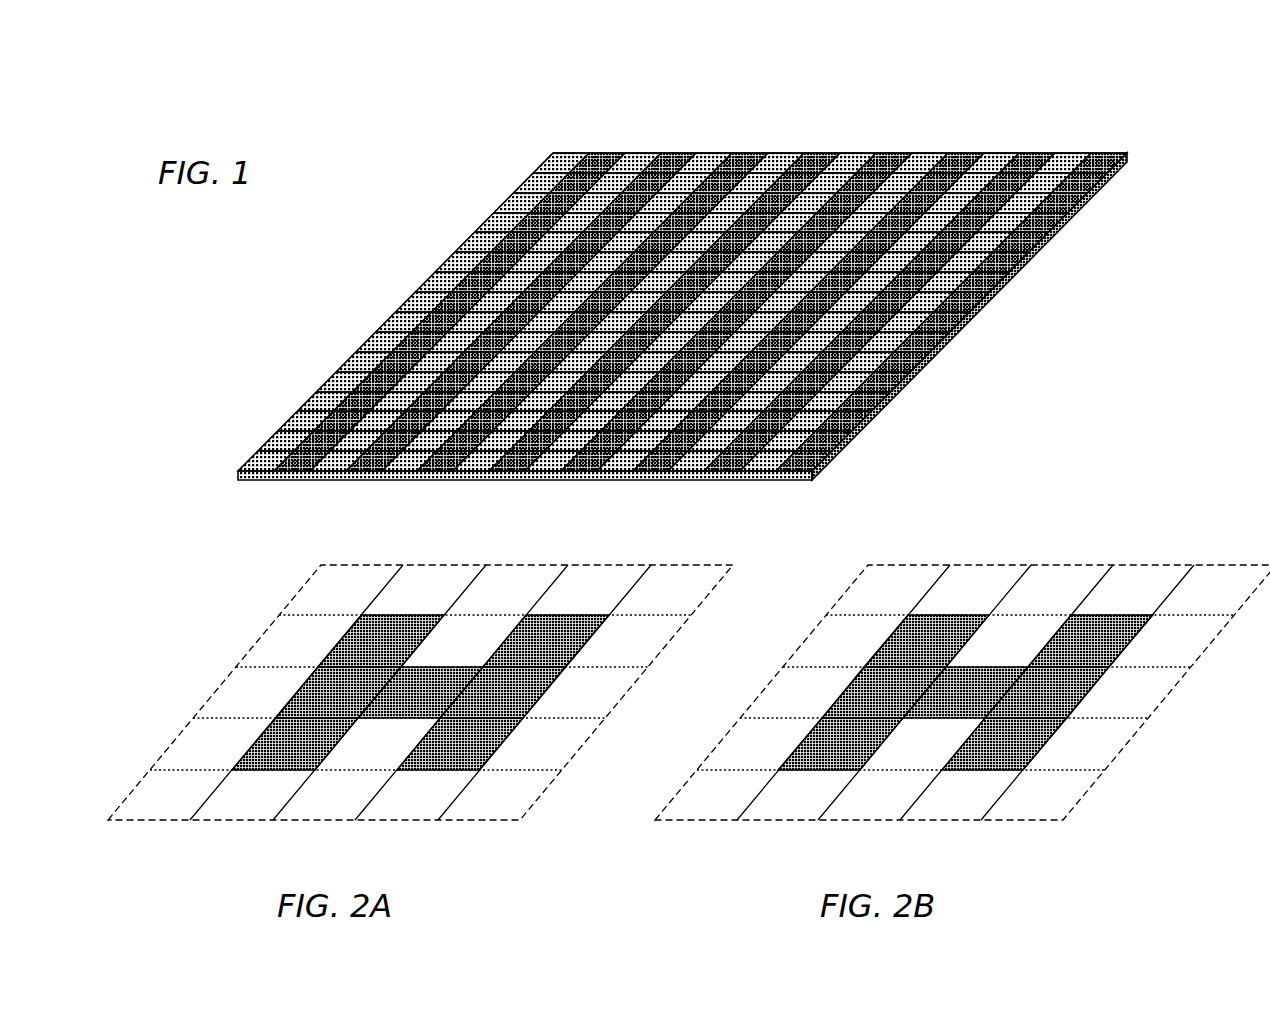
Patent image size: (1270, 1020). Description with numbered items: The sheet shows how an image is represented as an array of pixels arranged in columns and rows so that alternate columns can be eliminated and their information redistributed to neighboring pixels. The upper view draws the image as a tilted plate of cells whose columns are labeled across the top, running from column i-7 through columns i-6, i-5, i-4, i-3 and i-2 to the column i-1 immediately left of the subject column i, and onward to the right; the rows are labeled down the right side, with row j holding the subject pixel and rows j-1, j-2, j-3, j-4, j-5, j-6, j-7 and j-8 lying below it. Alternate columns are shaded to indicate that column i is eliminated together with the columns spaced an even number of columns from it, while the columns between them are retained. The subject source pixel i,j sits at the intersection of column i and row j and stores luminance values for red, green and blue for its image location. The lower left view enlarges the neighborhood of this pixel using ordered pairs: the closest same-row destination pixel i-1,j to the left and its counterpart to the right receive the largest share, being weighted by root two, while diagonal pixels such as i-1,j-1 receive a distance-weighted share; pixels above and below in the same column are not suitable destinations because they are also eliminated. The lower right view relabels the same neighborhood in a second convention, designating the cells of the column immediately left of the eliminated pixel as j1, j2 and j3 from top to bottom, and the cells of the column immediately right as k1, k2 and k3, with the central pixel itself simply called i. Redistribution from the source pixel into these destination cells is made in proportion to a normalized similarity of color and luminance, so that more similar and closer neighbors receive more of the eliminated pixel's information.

In FIG. 1, the column i-7 is at (574, 153).
In FIG. 1, the column i-6 is at (607, 153).
In FIG. 1, the column i-5 is at (646, 153).
In FIG. 1, the column i-4 is at (679, 153).
In FIG. 1, the column i-3 is at (717, 153).
In FIG. 1, the column i-2 is at (750, 153).
In FIG. 1, the column i-1 is at (789, 153).
In FIG. 1, the column i is at (822, 153).
In FIG. 2B, the column i is at (965, 692).
In FIG. 1, the row j is at (979, 305).
In FIG. 1, the row j-1 is at (960, 325).
In FIG. 1, the row j-2 is at (940, 345).
In FIG. 1, the row j-3 is at (920, 365).
In FIG. 1, the row j-4 is at (901, 385).
In FIG. 1, the row j-5 is at (881, 404).
In FIG. 1, the row j-6 is at (861, 424).
In FIG. 1, the row j-7 is at (842, 444).
In FIG. 1, the row j-8 is at (822, 464).
In FIG. 2A, the destination pixel (i-1, j) i-1,j is at (338, 692).
In FIG. 2A, the source pixel (i, j) i,j is at (420, 692).
In FIG. 2A, the destination pixel (i-1, j-1) i-1,j-1 is at (295, 744).
In FIG. 2B, the cell j1 is at (926, 641).
In FIG. 2B, the cell j2 is at (884, 692).
In FIG. 2B, the cell j3 is at (840, 744).
In FIG. 2B, the cell k1 is at (1090, 641).
In FIG. 2B, the cell k2 is at (1047, 692).
In FIG. 2B, the cell k3 is at (1004, 744).